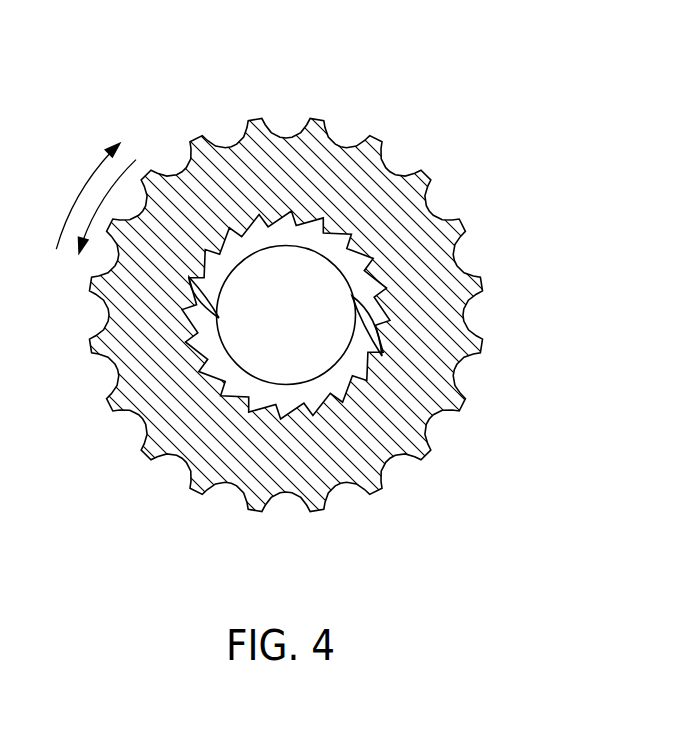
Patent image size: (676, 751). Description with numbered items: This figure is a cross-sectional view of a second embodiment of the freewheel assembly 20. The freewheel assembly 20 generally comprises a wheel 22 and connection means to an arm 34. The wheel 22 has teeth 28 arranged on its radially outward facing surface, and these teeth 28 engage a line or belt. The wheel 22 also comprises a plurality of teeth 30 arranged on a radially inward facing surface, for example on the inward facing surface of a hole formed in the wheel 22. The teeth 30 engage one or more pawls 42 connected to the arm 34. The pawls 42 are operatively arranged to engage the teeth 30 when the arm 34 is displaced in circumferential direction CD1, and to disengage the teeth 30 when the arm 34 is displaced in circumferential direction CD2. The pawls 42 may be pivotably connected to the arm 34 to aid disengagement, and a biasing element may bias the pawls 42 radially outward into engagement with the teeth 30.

The freewheel assembly 20 is at (522, 72).
The wheel 22 is at (255, 167).
The teeth 28 is at (377, 135).
The teeth 30 is at (372, 257).
The arm 34 is at (333, 343).
The pawls 42 is at (385, 313).
The circumferential direction CD1 is at (88, 182).
The circumferential direction CD2 is at (97, 215).